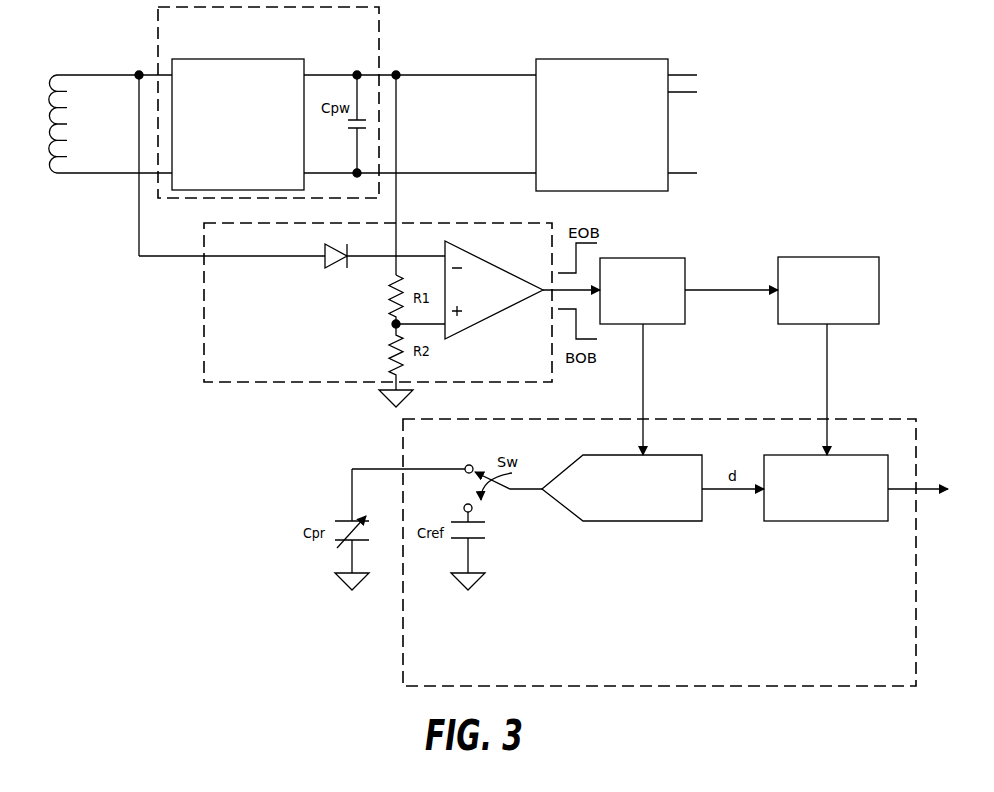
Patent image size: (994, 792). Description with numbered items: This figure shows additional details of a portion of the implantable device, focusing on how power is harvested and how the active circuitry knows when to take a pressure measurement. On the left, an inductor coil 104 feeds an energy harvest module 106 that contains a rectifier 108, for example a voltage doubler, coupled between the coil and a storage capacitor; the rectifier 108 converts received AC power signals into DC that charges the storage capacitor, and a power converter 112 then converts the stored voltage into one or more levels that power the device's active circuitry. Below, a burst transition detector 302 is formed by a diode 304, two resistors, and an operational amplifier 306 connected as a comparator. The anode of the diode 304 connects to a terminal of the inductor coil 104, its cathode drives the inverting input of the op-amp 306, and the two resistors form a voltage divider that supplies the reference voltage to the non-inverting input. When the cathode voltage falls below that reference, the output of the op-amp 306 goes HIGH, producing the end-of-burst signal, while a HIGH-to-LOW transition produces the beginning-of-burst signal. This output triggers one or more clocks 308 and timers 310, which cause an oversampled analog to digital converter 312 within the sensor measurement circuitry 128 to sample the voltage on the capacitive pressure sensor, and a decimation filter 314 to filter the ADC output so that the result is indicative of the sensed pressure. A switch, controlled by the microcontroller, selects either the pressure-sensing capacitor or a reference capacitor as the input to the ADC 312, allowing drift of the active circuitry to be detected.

The inductor coil 104 is at (70, 73).
The energy harvest module 106 is at (190, 52).
The rectifier 108 is at (227, 165).
The power converter 112 is at (590, 155).
The burst transition detector 302 is at (324, 371).
The diode 304 is at (338, 268).
The operational amplifier 306 is at (478, 325).
The clocks 308 is at (665, 324).
The timers 310 is at (857, 324).
The oversampled analog to digital converter 312 is at (676, 521).
The decimation filter 314 is at (861, 521).
The sensor measurement circuitry 128 is at (643, 678).